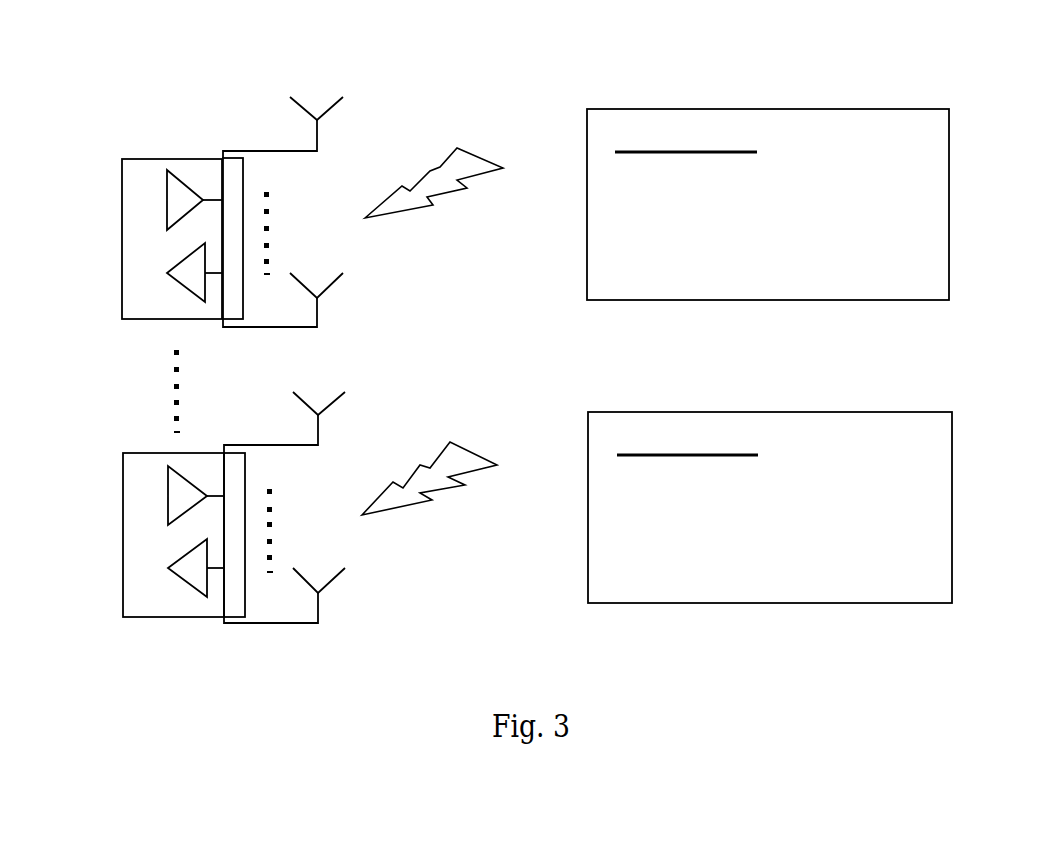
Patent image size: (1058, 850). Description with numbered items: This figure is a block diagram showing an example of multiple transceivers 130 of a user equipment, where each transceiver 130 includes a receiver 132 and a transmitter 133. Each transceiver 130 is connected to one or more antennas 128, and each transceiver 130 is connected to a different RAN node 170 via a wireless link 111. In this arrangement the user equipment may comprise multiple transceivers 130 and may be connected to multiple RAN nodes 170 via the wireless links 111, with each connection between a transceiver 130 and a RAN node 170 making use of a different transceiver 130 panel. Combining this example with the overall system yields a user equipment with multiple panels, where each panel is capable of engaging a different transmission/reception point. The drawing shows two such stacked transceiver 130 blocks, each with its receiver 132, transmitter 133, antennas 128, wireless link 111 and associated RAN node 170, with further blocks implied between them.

The transceiver 130 is at (195, 225).
The receiver 132 is at (172, 256).
The transmitter 133 is at (200, 223).
The antennas 128 is at (283, 212).
The wireless link 111 is at (432, 315).
The RAN node 170 is at (769, 356).